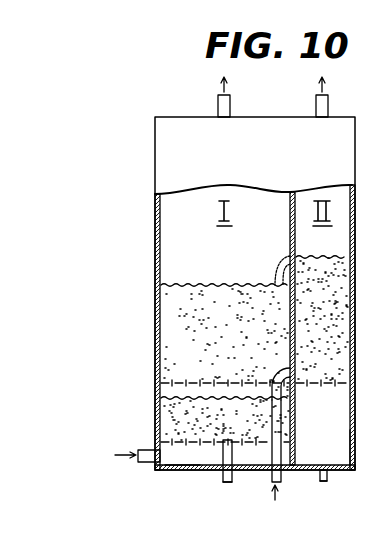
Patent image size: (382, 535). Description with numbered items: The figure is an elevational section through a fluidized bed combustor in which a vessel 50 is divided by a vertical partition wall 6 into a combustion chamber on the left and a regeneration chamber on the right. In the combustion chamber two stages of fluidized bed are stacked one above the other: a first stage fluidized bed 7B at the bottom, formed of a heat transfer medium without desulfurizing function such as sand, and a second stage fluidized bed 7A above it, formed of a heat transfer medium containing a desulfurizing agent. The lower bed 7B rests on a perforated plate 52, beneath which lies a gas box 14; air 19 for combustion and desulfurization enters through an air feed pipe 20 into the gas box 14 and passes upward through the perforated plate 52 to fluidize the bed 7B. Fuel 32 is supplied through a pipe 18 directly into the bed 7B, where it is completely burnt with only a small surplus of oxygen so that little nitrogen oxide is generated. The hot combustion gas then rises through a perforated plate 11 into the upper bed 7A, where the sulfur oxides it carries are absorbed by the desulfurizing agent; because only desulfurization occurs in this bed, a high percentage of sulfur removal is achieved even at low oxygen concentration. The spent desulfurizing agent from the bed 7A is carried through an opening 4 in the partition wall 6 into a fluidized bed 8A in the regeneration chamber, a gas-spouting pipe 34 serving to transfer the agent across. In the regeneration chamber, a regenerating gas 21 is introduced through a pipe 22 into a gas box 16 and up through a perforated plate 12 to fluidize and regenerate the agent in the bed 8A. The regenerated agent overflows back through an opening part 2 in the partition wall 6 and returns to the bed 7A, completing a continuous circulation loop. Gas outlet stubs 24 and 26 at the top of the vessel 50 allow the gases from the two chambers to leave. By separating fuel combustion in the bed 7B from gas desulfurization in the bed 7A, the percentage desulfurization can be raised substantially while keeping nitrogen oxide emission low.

The vessel 50 is at (155, 160).
The partition wall 6 is at (290, 218).
The gas outlet pipe 24 is at (218, 103).
The gas outlet pipe 26 is at (328, 104).
The opening part 2 is at (290, 250).
The fluidized bed 8A is at (320, 262).
The second stage fluidized bed 7A is at (208, 290).
The first stage fluidized bed 7B is at (170, 416).
The perforated plate 11 is at (160, 388).
The perforated plate 12 is at (314, 386).
The perforated plate 52 is at (161, 447).
The opening 4 is at (290, 362).
The gas-spouting pipe 34 is at (291, 452).
The pipe 18 is at (232, 477).
The fuel 32 is at (228, 482).
The air feed pipe 20 is at (152, 462).
The air 19 is at (117, 457).
The gas box 14 is at (184, 460).
The pipe 22 is at (328, 478).
The regenerating gas 21 is at (326, 483).
The gas box 16 is at (342, 453).